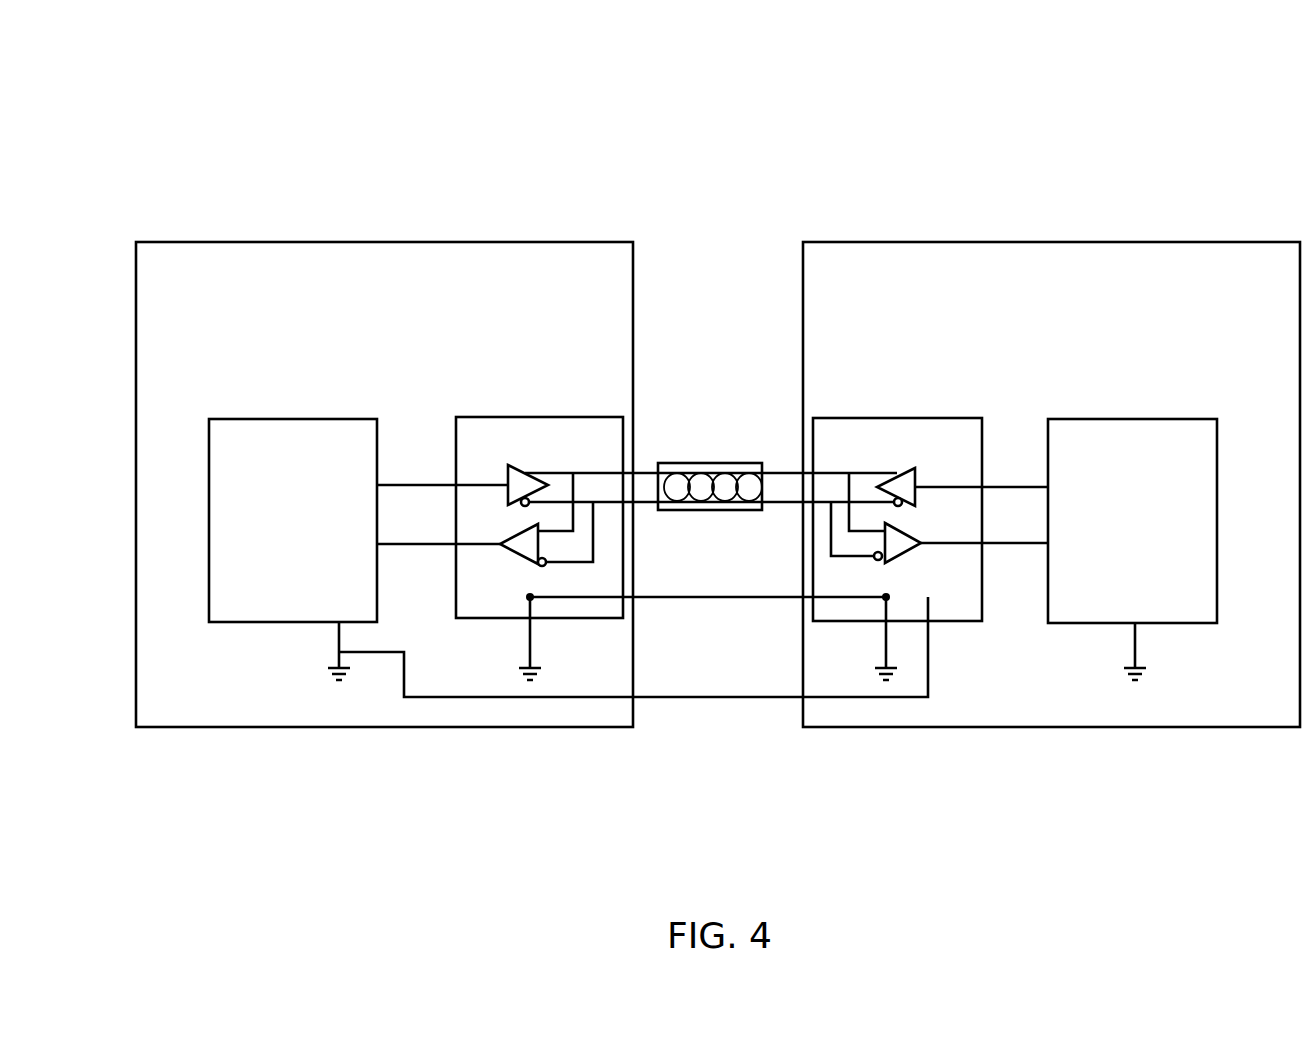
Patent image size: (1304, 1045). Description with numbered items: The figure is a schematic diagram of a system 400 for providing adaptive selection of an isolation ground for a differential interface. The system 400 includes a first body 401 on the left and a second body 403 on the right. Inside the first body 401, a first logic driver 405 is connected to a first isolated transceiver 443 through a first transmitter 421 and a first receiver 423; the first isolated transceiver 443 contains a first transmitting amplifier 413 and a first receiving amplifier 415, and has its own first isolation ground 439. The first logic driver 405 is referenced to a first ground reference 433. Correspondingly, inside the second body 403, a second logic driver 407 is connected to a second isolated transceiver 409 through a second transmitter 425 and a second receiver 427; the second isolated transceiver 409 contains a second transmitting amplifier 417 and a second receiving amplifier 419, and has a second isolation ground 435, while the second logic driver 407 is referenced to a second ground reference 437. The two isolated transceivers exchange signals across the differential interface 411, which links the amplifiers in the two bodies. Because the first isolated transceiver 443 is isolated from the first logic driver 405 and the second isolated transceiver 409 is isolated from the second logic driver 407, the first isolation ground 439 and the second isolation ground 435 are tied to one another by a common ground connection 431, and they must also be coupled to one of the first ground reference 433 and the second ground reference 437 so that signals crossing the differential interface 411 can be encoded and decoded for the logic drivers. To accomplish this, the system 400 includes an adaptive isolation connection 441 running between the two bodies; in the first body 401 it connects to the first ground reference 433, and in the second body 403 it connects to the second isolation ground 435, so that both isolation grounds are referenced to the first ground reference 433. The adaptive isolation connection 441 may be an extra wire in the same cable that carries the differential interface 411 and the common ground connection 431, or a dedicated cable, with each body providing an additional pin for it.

The system 400 is at (186, 58).
The first body 401 is at (188, 241).
The second body 403 is at (1248, 241).
The first logic driver 405 is at (208, 460).
The second logic driver 407 is at (1218, 463).
The second isolated transceiver 409 is at (929, 418).
The differential interface 411 is at (710, 462).
The first transmitting amplifier 413 is at (517, 466).
The first receiving amplifier 415 is at (516, 556).
The second transmitting amplifier 417 is at (906, 468).
The second receiving amplifier 419 is at (906, 557).
The first transmitter 421 is at (389, 484).
The first receiver 423 is at (394, 543).
The second transmitter 425 is at (1036, 486).
The second receiver 427 is at (1033, 542).
The common ground connection 431 is at (730, 599).
The first ground reference 433 is at (336, 663).
The second isolation ground 435 is at (883, 663).
The second ground reference 437 is at (1132, 663).
The first isolation ground 439 is at (527, 663).
The adaptive isolation connection 441 is at (730, 699).
The first isolated transceiver 443 is at (510, 417).